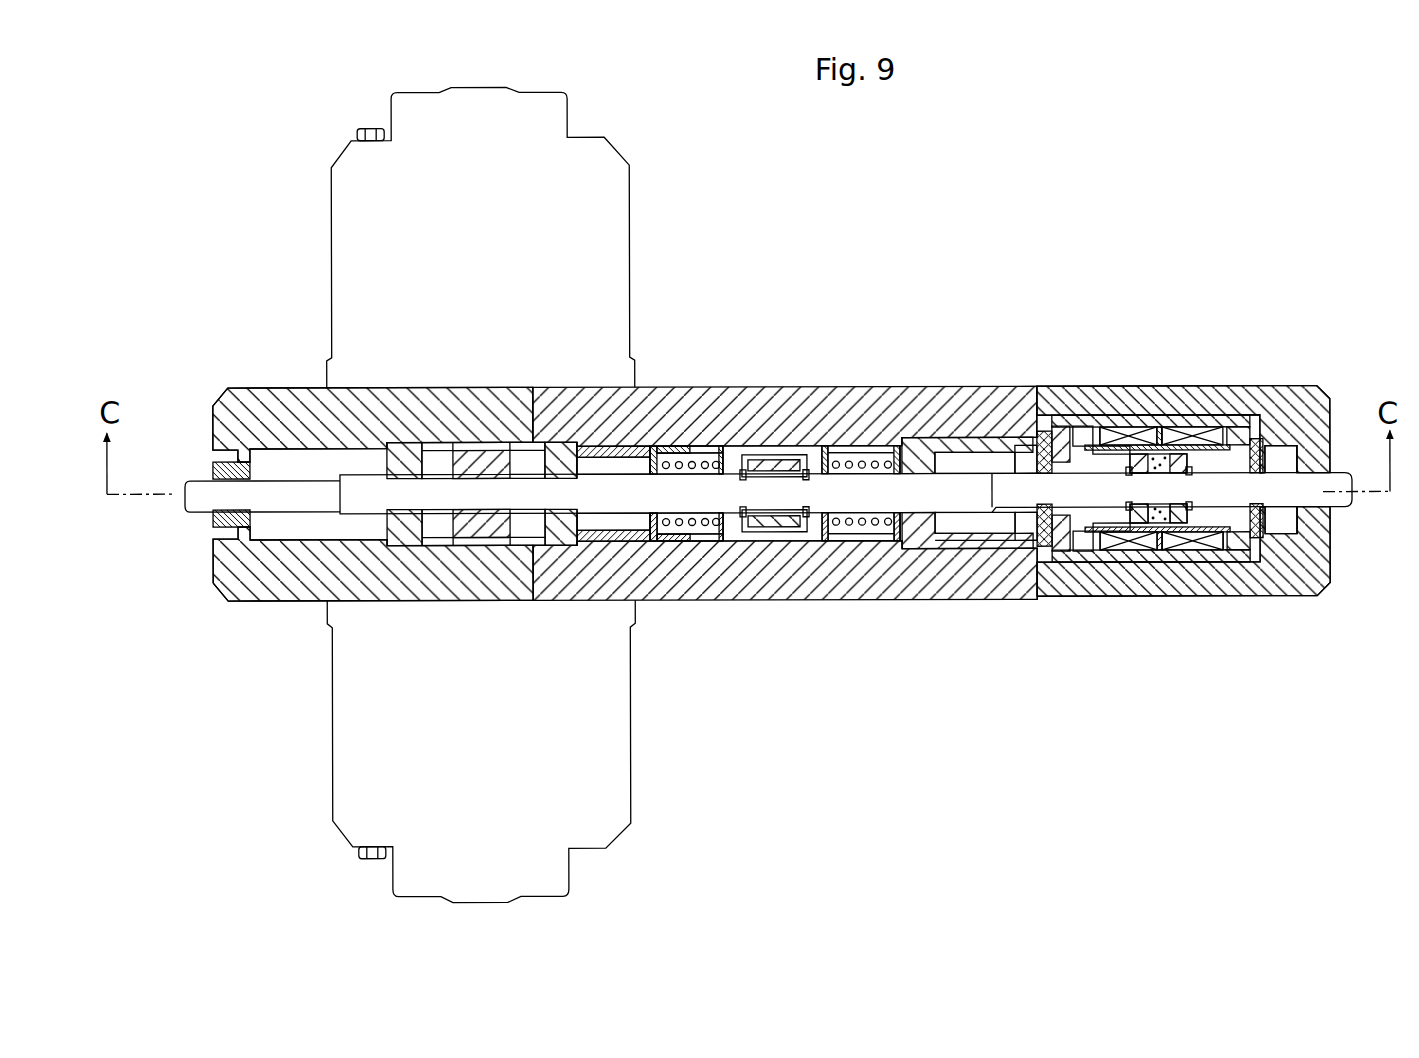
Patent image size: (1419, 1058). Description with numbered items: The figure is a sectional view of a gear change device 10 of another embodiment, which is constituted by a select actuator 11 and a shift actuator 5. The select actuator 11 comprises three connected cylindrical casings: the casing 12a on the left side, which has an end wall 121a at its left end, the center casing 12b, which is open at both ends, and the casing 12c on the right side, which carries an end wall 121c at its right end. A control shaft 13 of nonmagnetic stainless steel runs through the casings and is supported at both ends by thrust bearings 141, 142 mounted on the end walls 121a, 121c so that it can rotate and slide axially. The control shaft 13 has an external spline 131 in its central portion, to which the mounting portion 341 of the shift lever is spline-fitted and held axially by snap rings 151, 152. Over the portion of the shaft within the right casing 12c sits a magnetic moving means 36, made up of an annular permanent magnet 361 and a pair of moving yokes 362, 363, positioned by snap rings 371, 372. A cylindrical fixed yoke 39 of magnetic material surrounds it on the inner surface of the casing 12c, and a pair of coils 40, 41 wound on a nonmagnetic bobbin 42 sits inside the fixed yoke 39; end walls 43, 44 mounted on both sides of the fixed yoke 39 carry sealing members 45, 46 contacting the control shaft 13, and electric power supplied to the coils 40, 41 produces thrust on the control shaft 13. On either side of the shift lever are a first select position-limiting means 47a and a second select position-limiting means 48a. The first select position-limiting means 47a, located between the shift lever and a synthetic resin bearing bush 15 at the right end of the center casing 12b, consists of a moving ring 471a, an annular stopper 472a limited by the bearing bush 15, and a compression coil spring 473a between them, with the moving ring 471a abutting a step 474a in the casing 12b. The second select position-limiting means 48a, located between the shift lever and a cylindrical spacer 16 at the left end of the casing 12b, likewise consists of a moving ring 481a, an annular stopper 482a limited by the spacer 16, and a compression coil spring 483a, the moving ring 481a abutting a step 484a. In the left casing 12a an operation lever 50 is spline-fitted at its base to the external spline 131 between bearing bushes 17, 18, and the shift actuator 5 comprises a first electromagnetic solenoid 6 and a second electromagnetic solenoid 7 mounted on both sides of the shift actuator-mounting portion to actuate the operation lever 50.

The shift actuator 5 is at (643, 117).
The first electromagnetic solenoid 6 is at (292, 768).
The second electromagnetic solenoid 7 is at (298, 212).
The gear change device 10 is at (1004, 247).
The select actuator 11 is at (775, 254).
The casing on the left side 12a is at (290, 400).
The center casing 12b is at (818, 400).
The casing on the right side 12c is at (1200, 400).
The end wall 121a is at (211, 448).
The end wall 121c is at (1305, 560).
The control shaft 13 is at (1043, 440).
The external spline 131 is at (582, 387).
The thrust bearing 141 is at (207, 514).
The thrust bearing 142 is at (1326, 387).
The bearing bush 15 is at (996, 446).
The snap ring 151 is at (807, 518).
The snap ring 152 is at (745, 518).
The cylindrical spacer 16 is at (614, 387).
The bearing bush 17 is at (548, 387).
The bearing bush 18 is at (376, 387).
The mounting portion 341 is at (778, 458).
The magnetic moving means 36 is at (1113, 447).
The permanent magnet 361 is at (1158, 527).
The moving yoke 362 is at (1180, 540).
The moving yoke 363 is at (1130, 545).
The snap ring 371 is at (1218, 555).
The snap ring 372 is at (1128, 512).
The fixed yoke 39 is at (1086, 420).
The coil 40 is at (1216, 440).
The coil 41 is at (1122, 458).
The bobbin 42 is at (1158, 440).
The end wall 43 is at (1240, 433).
The end wall 44 is at (1060, 440).
The sealing member 45 is at (1262, 542).
The sealing member 46 is at (1008, 545).
The first select position-limiting means 47a is at (896, 442).
The moving ring 471a is at (858, 452).
The annular stopper 472a is at (937, 446).
The compression coil spring 473a is at (878, 541).
The step 474a is at (826, 450).
The second select position-limiting means 48a is at (688, 440).
The moving ring 481a is at (720, 470).
The annular stopper 482a is at (655, 445).
The compression coil spring 483a is at (700, 541).
The step 484a is at (700, 454).
The operation lever 50 is at (474, 387).